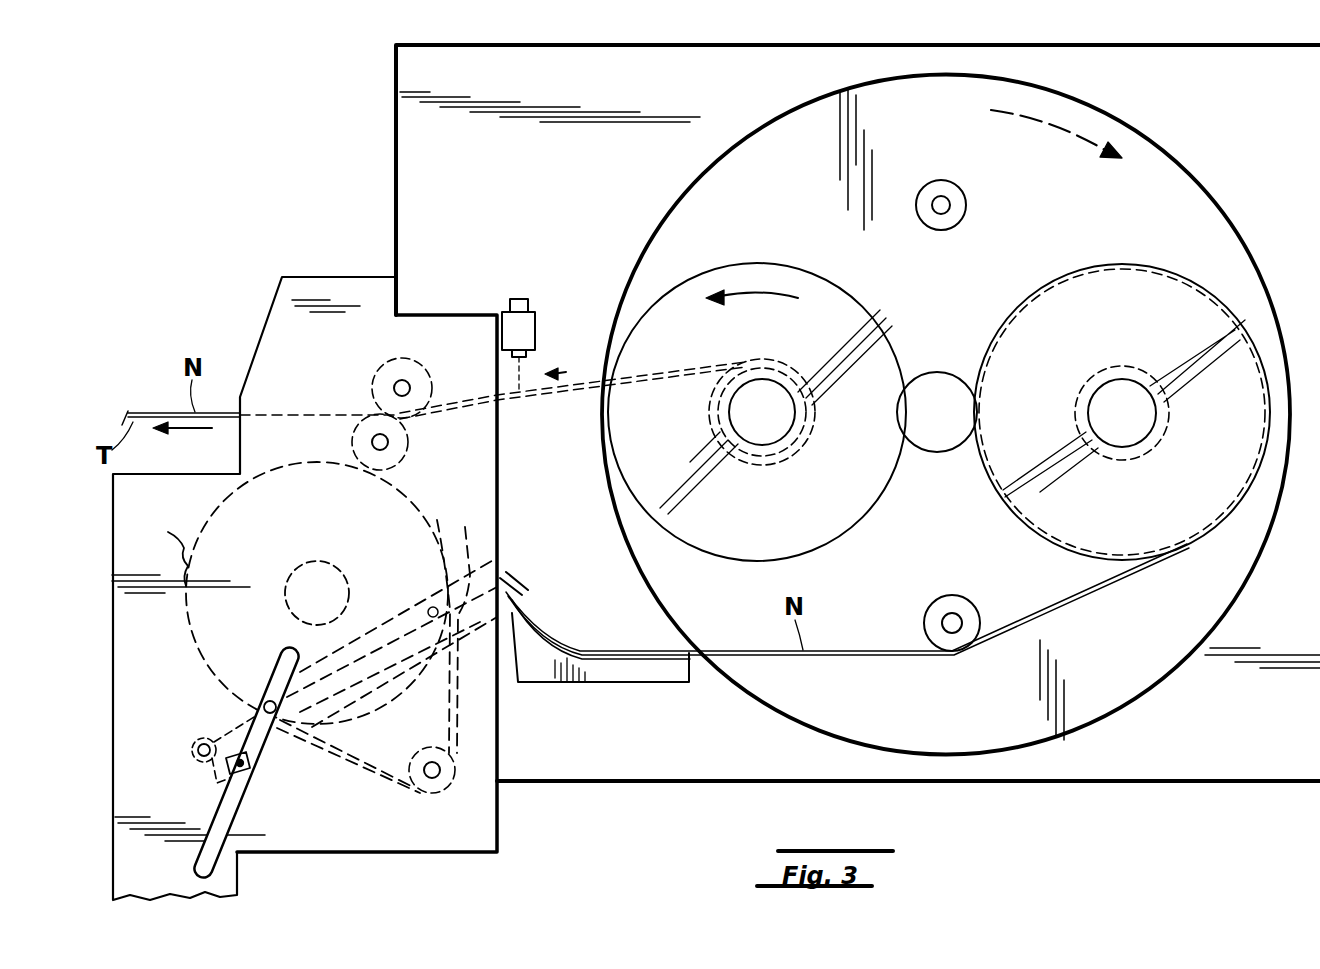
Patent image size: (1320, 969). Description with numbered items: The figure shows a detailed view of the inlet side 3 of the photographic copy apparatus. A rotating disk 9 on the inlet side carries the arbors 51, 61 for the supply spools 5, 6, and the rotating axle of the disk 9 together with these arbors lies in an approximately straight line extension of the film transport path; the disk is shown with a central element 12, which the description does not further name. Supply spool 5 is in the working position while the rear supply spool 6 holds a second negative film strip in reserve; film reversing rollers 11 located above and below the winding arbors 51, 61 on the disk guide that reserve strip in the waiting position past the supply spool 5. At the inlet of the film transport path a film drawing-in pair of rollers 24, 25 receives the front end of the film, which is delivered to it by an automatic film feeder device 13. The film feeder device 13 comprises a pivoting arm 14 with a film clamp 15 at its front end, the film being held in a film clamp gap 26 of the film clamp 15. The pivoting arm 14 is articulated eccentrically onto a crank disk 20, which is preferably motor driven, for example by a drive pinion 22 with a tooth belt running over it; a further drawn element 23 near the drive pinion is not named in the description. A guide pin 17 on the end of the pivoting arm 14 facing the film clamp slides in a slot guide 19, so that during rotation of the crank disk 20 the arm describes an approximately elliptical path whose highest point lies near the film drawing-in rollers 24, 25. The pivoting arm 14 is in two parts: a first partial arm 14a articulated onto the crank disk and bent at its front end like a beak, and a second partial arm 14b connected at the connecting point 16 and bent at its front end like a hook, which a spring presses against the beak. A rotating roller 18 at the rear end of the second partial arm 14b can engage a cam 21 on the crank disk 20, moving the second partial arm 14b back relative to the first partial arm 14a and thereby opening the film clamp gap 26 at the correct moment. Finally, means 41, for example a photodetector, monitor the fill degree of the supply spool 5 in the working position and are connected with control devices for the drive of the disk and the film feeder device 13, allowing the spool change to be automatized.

The inlet side 3 is at (396, 152).
The supply spool 5 is at (668, 326).
The supply spool 6 is at (1184, 305).
The disk 9 is at (1180, 195).
The film reversing rollers 11 is at (960, 208).
The turret shaft 12 is at (937, 374).
The film feeder device 13 is at (507, 722).
The pivoting arm 14 is at (396, 622).
The first partial arm 14a is at (462, 630).
The second partial arm 14b is at (378, 684).
The film clamp 15 is at (510, 584).
The connecting point 16 is at (246, 768).
The guide pin 17 is at (266, 700).
The rotating roller 18 is at (197, 744).
The slot guide 19 is at (232, 822).
The crank disk 20 is at (186, 636).
The cam 21 is at (168, 532).
The drive pinion 22 is at (432, 792).
The link 23 is at (372, 776).
The film drawing-in roller 24 is at (412, 380).
The film drawing-in roller 25 is at (404, 445).
The film clamp gap 26 is at (524, 595).
The means to monitor fill degree 41 is at (537, 333).
The arbor 51 is at (786, 432).
The arbor 61 is at (1134, 432).